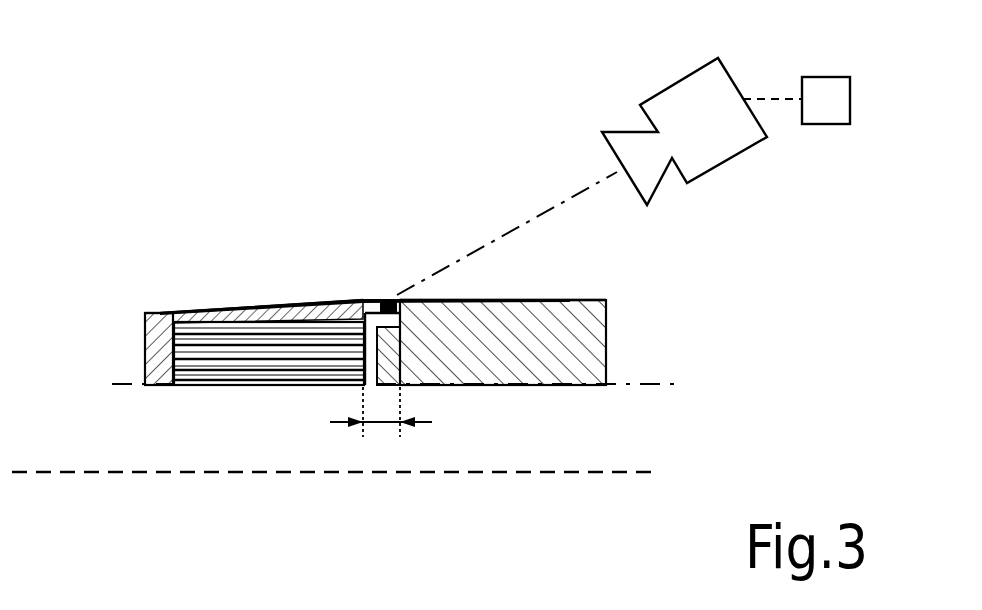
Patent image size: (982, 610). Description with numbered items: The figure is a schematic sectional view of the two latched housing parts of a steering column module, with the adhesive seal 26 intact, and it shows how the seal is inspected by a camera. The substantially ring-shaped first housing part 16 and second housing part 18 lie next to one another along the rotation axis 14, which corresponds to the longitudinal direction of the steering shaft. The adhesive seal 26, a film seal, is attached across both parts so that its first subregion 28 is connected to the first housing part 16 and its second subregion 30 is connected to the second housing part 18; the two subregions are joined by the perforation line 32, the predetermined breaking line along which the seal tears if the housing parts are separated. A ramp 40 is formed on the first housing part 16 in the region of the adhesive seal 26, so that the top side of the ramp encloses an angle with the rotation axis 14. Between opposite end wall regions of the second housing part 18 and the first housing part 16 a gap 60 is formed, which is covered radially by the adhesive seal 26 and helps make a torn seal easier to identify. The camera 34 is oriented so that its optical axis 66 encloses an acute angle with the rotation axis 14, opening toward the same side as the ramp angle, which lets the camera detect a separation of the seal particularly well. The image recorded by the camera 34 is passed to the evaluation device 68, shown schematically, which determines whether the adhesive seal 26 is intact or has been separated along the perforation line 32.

The rotation axis 14 is at (230, 473).
The first housing part 16 is at (165, 358).
The second housing part 18 is at (595, 338).
The adhesive seal 26 is at (352, 295).
The first subregion 28 is at (255, 307).
The second subregion 30 is at (503, 298).
The perforation line 32 is at (392, 300).
The camera 34 is at (687, 90).
The ramp 40 is at (317, 307).
The gap 60 is at (382, 422).
The optical axis 66 is at (503, 232).
The evaluation device 68 is at (827, 87).